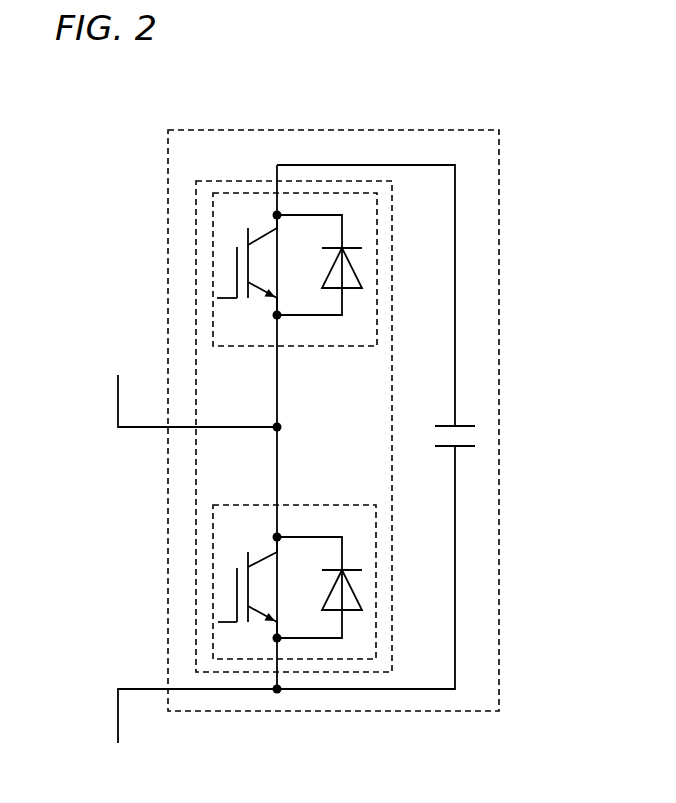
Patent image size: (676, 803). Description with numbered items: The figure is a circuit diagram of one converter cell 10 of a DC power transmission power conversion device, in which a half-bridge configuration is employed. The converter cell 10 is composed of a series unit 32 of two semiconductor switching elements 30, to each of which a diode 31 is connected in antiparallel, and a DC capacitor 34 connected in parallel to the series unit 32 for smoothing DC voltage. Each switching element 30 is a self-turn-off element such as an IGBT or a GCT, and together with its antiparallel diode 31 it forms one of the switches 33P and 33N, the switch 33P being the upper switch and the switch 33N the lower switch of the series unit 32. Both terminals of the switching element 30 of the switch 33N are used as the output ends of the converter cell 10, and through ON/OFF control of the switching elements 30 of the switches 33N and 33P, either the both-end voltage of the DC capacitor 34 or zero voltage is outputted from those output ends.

The converter cell 10 is at (475, 130).
The series unit 32 is at (203, 181).
The switch 33P is at (213, 275).
The switch 33N is at (213, 598).
The semiconductor switching element 30 is at (226, 247).
The diode 31 is at (355, 238).
The DC capacitor 34 is at (463, 415).